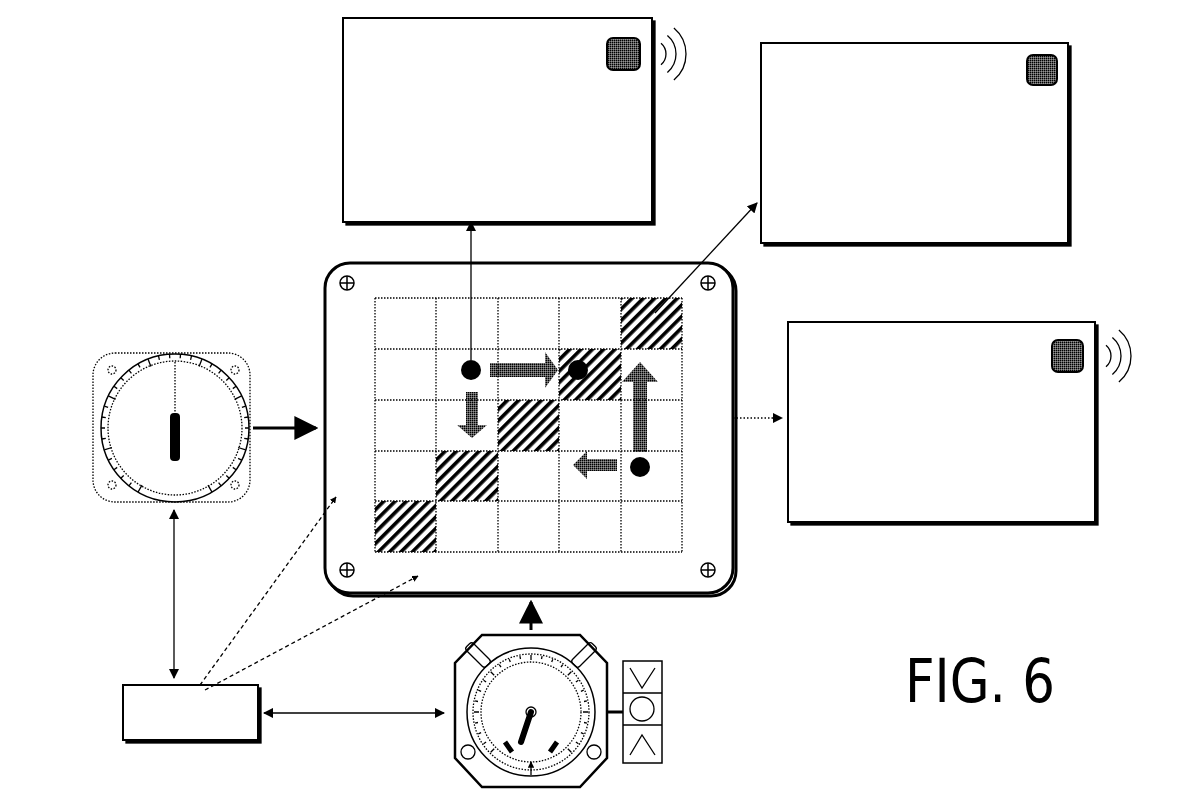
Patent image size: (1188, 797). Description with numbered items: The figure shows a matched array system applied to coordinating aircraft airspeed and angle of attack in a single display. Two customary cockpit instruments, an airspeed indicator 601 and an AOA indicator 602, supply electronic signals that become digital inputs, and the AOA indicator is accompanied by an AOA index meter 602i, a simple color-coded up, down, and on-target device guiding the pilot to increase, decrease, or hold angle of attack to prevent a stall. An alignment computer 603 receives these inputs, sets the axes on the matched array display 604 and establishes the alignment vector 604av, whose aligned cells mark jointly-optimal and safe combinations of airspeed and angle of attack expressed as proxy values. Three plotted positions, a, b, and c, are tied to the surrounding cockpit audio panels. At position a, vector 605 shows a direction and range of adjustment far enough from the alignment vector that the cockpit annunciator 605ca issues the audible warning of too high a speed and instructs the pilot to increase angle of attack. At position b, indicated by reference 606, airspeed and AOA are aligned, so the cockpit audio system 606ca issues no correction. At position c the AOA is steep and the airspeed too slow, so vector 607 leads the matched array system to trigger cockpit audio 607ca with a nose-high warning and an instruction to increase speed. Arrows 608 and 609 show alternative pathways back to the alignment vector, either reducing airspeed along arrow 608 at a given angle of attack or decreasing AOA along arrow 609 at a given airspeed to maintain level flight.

The airspeed indicator 601 is at (173, 352).
The AOA indicator 602 is at (455, 745).
The AOA index meter 602i is at (665, 712).
The alignment computer 603 is at (132, 685).
The matched array display 604 is at (523, 409).
The alignment vector 604av is at (487, 410).
The vector 605 is at (515, 366).
The cockpit annunciator 605ca is at (343, 65).
The aligned position indication 606 is at (723, 237).
The cockpit audio system 606ca is at (1069, 100).
The vector 607 is at (672, 390).
The cockpit audio 607ca is at (1070, 322).
The arrow 608 is at (463, 420).
The arrow 609 is at (602, 472).